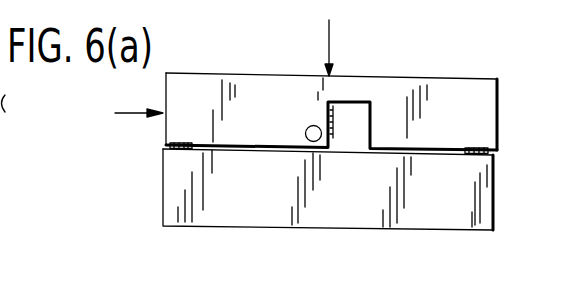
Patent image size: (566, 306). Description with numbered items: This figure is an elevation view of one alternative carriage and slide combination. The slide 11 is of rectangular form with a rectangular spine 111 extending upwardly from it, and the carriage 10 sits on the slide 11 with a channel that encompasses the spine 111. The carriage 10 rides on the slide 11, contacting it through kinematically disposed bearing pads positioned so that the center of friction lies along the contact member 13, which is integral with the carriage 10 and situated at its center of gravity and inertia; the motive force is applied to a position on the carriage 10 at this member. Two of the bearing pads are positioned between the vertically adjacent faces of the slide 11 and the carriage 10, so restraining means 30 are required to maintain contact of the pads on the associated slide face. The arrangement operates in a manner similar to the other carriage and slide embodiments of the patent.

The carriage 10 is at (400, 90).
The slide 11 is at (480, 226).
The contact member 13 is at (307, 139).
The restraining means 30 is at (128, 113).
The rectangular spine 111 is at (348, 117).